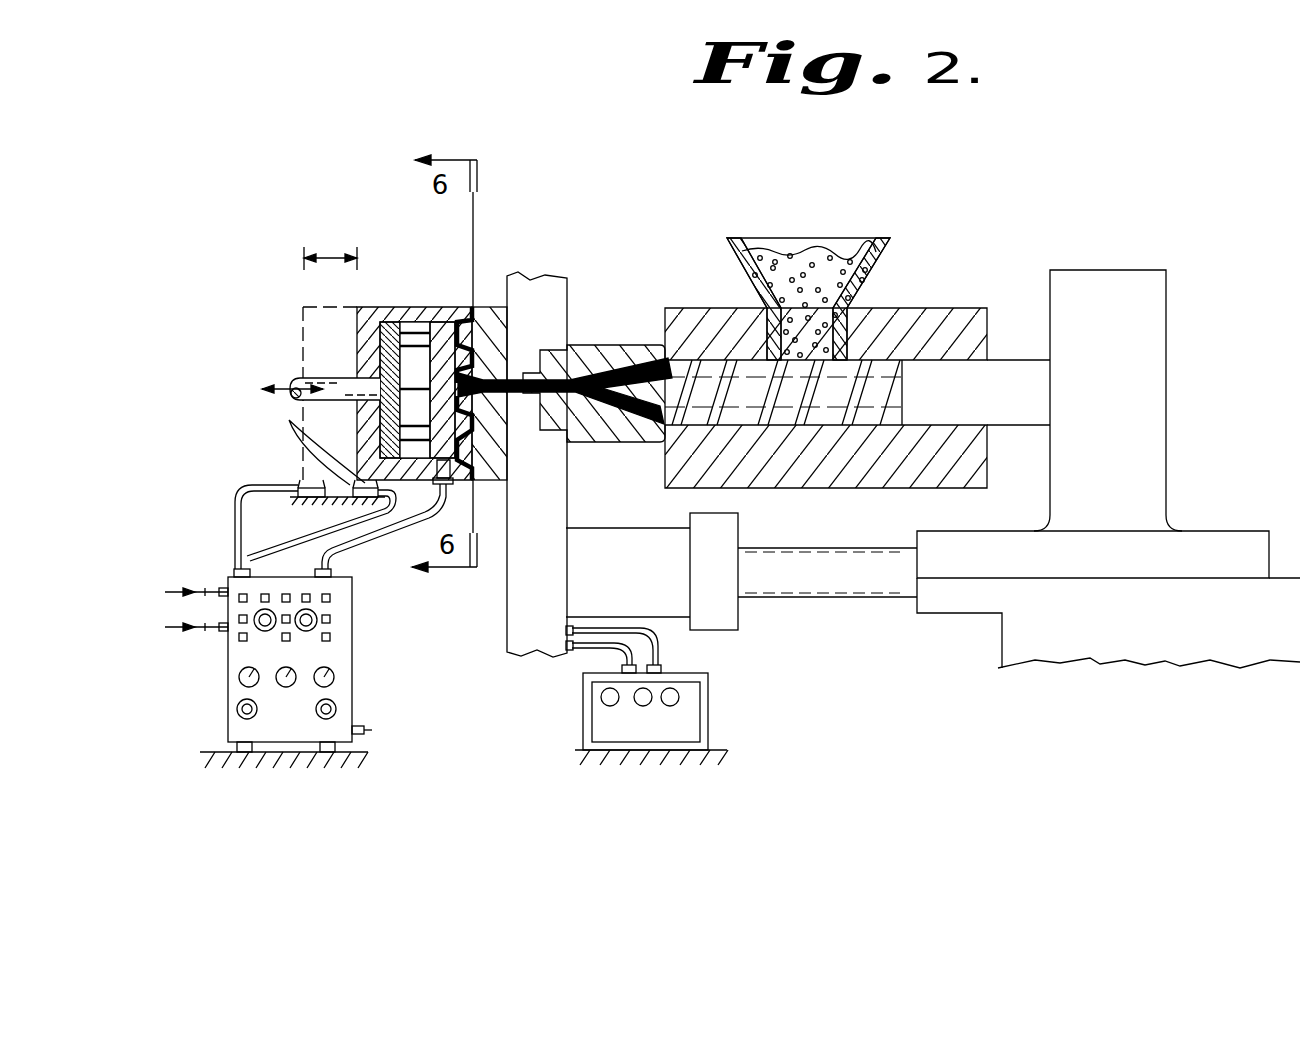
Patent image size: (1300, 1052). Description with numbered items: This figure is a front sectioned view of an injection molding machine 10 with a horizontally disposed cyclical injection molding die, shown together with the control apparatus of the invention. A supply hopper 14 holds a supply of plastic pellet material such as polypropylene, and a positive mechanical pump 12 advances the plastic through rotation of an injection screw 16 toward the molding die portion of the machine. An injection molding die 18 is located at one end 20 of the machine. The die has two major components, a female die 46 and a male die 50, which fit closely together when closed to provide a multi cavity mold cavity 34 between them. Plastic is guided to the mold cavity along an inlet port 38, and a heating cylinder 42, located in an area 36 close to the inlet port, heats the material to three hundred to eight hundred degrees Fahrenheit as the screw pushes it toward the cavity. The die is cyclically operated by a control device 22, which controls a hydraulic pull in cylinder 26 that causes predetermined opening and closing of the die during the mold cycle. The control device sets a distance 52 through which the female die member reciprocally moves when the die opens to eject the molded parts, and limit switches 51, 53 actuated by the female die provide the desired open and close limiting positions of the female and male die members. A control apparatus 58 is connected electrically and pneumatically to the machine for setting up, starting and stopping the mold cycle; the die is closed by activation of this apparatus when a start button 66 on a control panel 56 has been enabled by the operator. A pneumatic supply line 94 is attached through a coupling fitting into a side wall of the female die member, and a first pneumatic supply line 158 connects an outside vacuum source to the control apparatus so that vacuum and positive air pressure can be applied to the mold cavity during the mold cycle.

The injection molding machine 10 is at (683, 268).
The positive mechanical pump 12 is at (1000, 365).
The supply hopper 14 is at (848, 237).
The injection screw 16 is at (876, 380).
The injection molding die 18 is at (415, 307).
The end of the machine 20 is at (545, 360).
The control device 22 is at (1042, 624).
The hydraulic pull in cylinder 26 is at (853, 590).
The multi cavity mold cavity 34 is at (466, 318).
The area 36 is at (633, 360).
The inlet port 38 is at (508, 305).
The heating cylinder 42 is at (606, 300).
The female die 46 is at (357, 345).
The male die 50 is at (487, 307).
The limit switch 51 is at (298, 480).
The distance 52 is at (338, 253).
The limit switch 53 is at (283, 421).
The control panel 56 is at (634, 731).
The control apparatus 58 is at (352, 652).
The start button 66 is at (605, 705).
The pneumatic supply line 94 is at (373, 540).
The first pneumatic supply line 158 is at (218, 632).